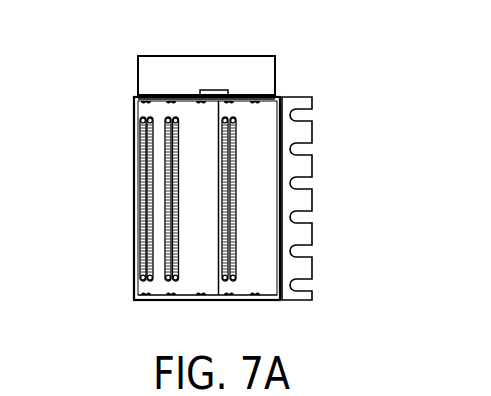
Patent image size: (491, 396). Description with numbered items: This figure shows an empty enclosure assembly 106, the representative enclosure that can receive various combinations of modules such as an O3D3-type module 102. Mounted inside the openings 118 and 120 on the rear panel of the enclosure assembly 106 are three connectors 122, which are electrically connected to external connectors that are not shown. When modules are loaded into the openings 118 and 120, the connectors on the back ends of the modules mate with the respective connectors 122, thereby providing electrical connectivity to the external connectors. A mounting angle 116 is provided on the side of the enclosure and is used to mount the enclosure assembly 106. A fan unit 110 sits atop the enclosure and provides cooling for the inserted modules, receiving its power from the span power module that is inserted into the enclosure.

The O3D3-type module 102 is at (58, 344).
The enclosure assembly 106 is at (100, 116).
The fan unit 110 is at (278, 76).
The mounting angle 116 is at (312, 122).
The opening 118 is at (190, 280).
The opening 120 is at (272, 182).
The connector 122 is at (140, 213).